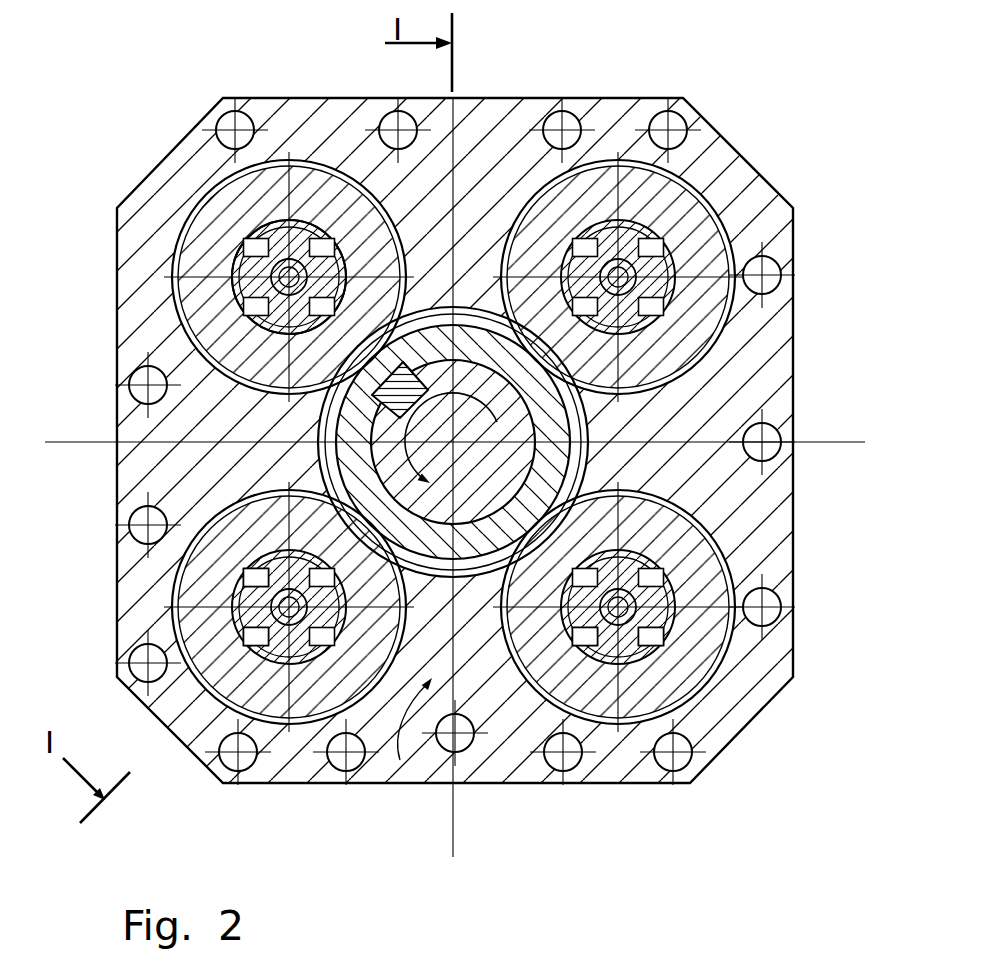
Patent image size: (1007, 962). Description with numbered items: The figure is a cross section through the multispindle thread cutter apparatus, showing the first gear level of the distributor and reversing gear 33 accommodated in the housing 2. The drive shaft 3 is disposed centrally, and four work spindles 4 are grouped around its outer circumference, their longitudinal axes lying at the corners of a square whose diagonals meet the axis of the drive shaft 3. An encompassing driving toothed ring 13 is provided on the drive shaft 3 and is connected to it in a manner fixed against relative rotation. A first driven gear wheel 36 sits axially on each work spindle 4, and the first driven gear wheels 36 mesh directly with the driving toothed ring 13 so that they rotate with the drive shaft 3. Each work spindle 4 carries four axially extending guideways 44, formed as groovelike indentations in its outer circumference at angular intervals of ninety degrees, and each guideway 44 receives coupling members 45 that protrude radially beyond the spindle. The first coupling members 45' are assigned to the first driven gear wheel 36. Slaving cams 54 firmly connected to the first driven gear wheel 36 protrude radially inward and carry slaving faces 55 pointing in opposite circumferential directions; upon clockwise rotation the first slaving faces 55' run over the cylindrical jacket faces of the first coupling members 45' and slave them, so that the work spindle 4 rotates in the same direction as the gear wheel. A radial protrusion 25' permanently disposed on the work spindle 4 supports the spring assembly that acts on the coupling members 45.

The housing 2 is at (737, 705).
The drive shaft 3 is at (468, 493).
The driving toothed ring 13 is at (470, 330).
The first driven gear wheel 36 is at (230, 220).
The work spindle 4 is at (243, 267).
The radial protrusion 25' is at (289, 172).
The slaving cam 54 is at (300, 222).
The slaving face 55 is at (462, 560).
The first slaving face 55' is at (151, 669).
The guideway 44 is at (243, 575).
The coupling member 45 is at (601, 754).
The first coupling member 45' is at (651, 637).
The distributor and reversing gear 33 is at (400, 760).